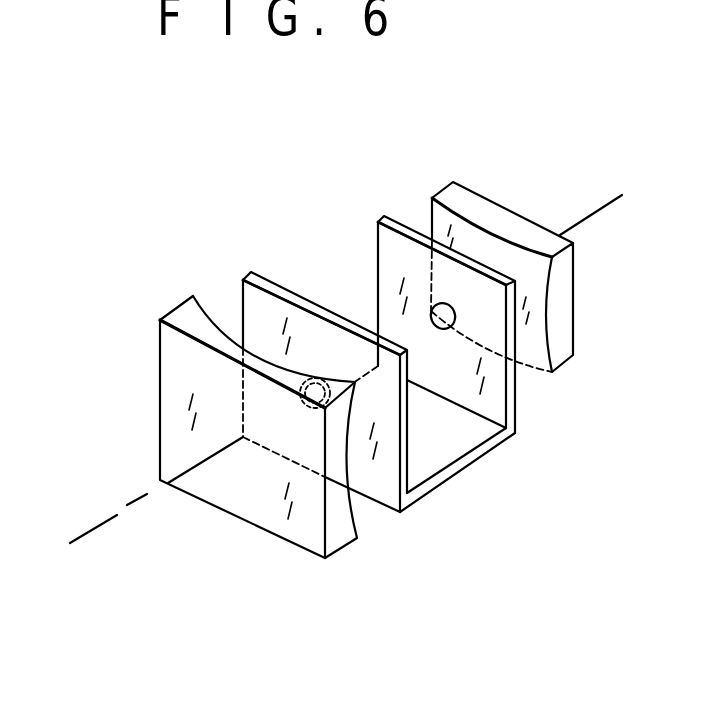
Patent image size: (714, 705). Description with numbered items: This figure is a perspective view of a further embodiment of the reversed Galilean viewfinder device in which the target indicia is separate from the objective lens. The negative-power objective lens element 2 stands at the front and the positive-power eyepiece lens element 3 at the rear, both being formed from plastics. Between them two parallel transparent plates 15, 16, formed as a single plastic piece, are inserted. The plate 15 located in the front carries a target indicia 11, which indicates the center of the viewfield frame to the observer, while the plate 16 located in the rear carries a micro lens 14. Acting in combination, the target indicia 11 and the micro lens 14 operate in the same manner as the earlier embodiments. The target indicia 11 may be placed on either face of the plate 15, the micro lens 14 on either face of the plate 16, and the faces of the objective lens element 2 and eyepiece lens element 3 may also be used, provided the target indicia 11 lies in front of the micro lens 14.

The objective lens element 2 is at (160, 359).
The eyepiece lens element 3 is at (480, 203).
The target indicia 11 is at (302, 395).
The micro lens 14 is at (450, 307).
The plate 15 is at (288, 284).
The plate 16 is at (398, 221).